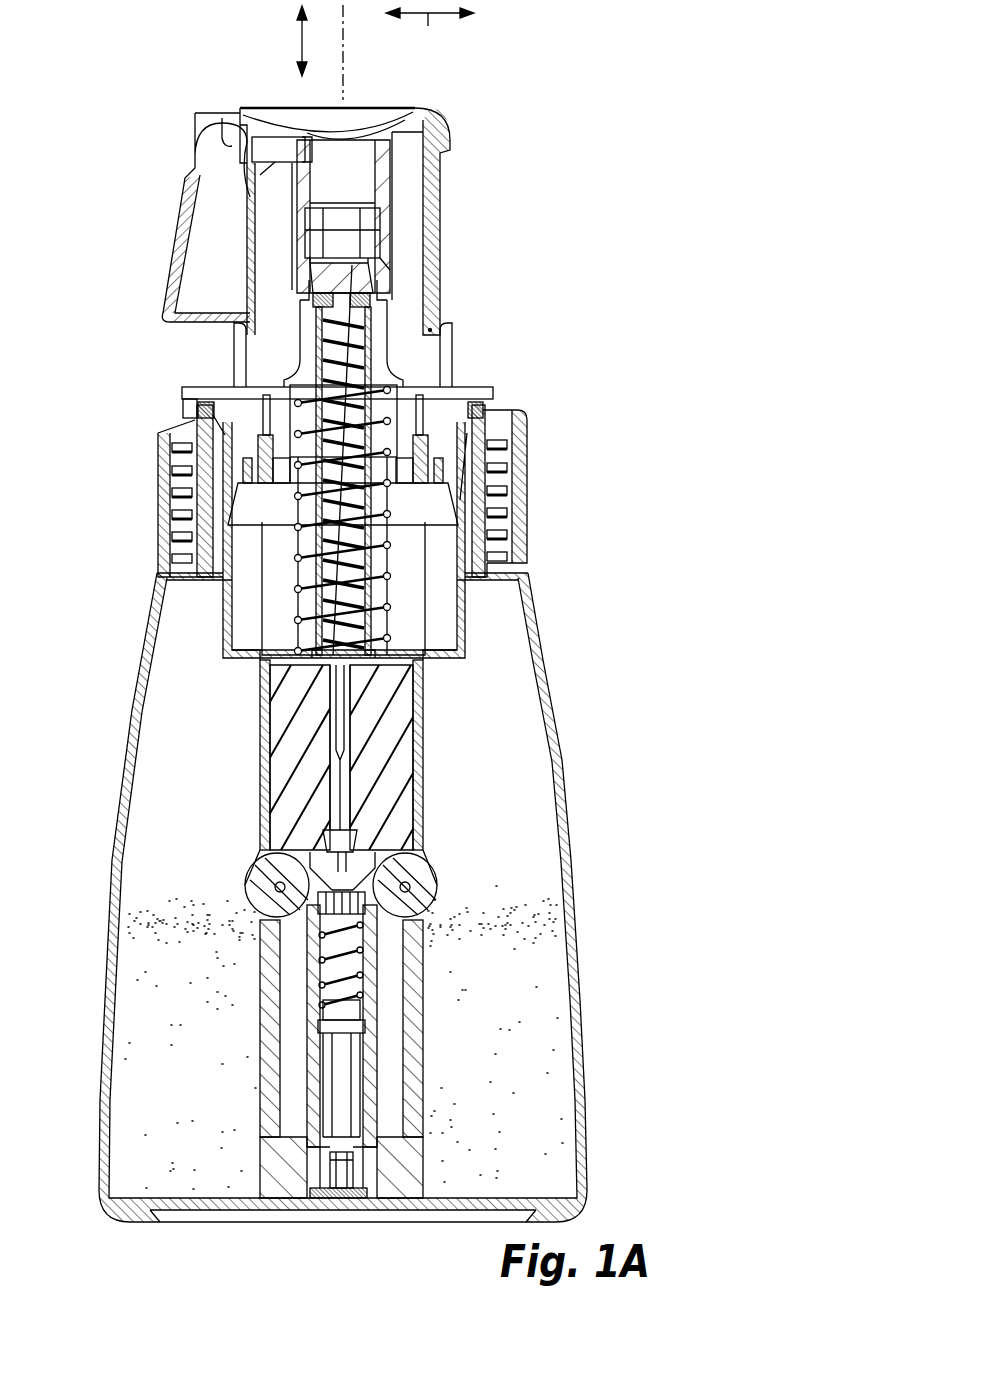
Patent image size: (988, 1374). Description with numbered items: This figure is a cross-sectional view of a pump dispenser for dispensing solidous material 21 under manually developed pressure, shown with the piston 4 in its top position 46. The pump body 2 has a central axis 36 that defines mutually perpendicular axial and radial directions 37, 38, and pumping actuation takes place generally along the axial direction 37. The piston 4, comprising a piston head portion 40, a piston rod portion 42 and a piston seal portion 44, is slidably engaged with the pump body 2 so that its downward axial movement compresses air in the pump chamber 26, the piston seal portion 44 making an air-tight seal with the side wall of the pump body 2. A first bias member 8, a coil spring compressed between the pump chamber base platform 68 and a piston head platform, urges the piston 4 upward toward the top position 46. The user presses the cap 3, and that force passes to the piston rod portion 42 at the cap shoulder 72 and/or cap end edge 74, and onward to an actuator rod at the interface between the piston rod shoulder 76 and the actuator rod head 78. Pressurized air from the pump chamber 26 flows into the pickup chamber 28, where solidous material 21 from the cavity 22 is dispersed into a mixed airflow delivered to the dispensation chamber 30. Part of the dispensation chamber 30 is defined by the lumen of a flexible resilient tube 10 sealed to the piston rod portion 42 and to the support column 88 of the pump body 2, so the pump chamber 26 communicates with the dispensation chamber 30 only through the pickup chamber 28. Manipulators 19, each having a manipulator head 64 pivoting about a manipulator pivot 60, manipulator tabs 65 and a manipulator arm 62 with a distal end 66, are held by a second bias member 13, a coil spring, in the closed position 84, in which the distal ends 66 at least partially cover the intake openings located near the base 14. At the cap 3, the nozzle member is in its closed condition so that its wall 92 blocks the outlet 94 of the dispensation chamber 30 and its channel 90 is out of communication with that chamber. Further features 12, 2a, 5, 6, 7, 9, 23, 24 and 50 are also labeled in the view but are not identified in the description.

The flexible resilient member (resilient tube) 10 is at (598, 93).
The container body 12 is at (572, 826).
The solidous material 21 is at (140, 1080).
The cavity 22 is at (170, 800).
The pump chamber 26 is at (250, 619).
The pump body 2 is at (238, 665).
The sleeve flange 2a is at (207, 396).
The cap 3 is at (432, 160).
The piston 4 is at (433, 380).
The seal liner 5 is at (486, 408).
The closure cap 6 is at (500, 430).
The closure threads 7 is at (503, 480).
The first bias member 8 is at (390, 538).
The piston stem tube 9 is at (376, 607).
The second bias member 13 is at (367, 962).
The base 14 is at (345, 1198).
The manipulators 19 is at (282, 888).
The closure cap left wall 23 is at (190, 442).
The gasket liner 24 is at (203, 410).
The pickup chamber 28 is at (323, 1147).
The dispensation chamber 30 is at (353, 162).
The central axis 36 is at (345, 89).
The axial direction 37 is at (298, 43).
The radial direction 38 is at (430, 30).
The piston head portion 40 is at (422, 395).
The piston rod portion 42 is at (388, 310).
The piston seal portion 44 is at (237, 487).
The top position 46 is at (388, 330).
The inner post 50 is at (257, 410).
The manipulator pivot 60 is at (410, 886).
The manipulator arm 62 is at (270, 1018).
The manipulator head 64 is at (262, 875).
The manipulator tabs 65 is at (360, 870).
The distal ends 66 is at (272, 1168).
The pump chamber base platform 68 is at (435, 650).
The cap shoulder 72 is at (383, 201).
The cap end edge 74 is at (388, 290).
The piston rod shoulder 76 is at (313, 262).
The actuator rod head 78 is at (377, 248).
The closed position 84 is at (428, 1078).
The support column 88 is at (377, 622).
The channel 90 is at (220, 163).
The wall 92 is at (222, 118).
The outlet 94 is at (255, 147).